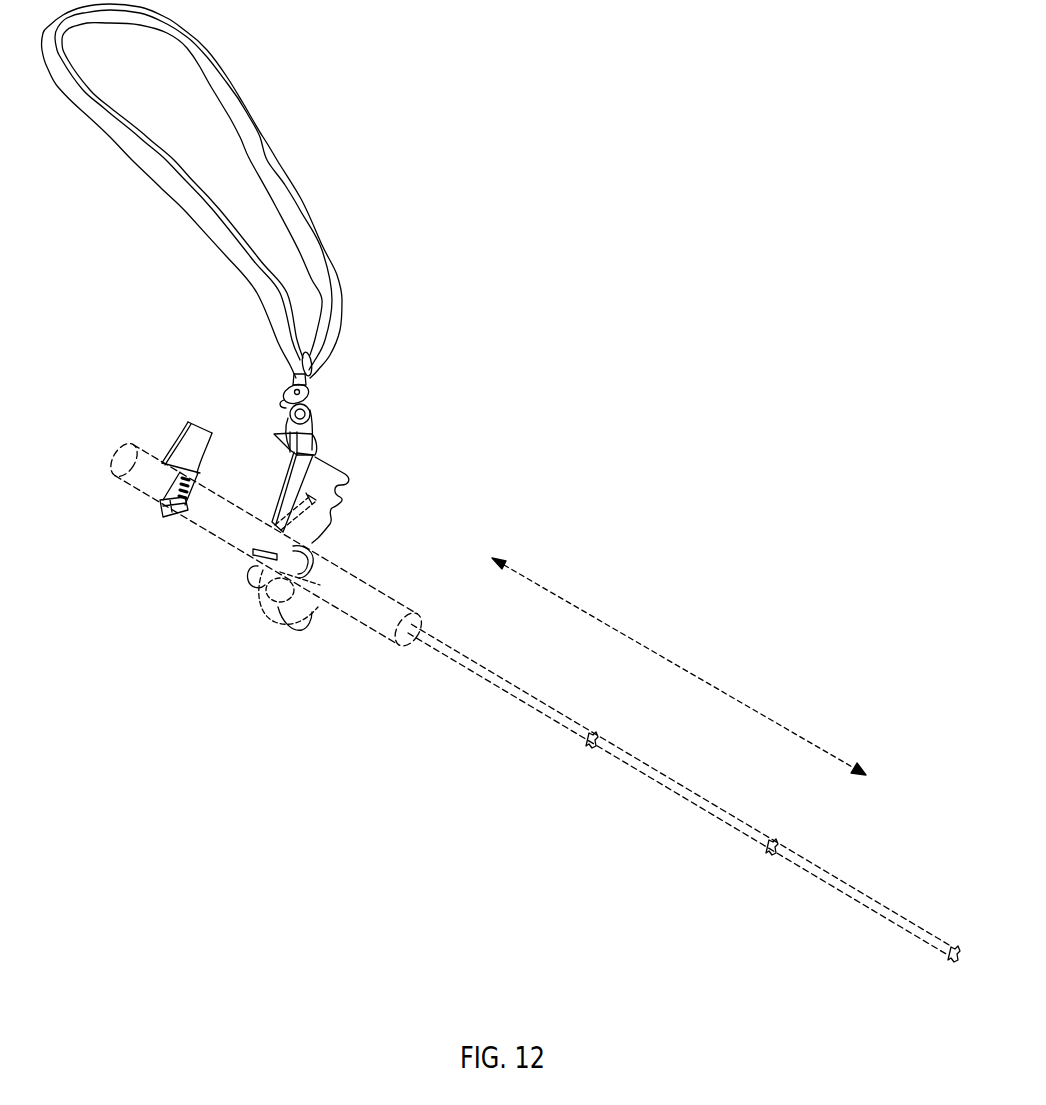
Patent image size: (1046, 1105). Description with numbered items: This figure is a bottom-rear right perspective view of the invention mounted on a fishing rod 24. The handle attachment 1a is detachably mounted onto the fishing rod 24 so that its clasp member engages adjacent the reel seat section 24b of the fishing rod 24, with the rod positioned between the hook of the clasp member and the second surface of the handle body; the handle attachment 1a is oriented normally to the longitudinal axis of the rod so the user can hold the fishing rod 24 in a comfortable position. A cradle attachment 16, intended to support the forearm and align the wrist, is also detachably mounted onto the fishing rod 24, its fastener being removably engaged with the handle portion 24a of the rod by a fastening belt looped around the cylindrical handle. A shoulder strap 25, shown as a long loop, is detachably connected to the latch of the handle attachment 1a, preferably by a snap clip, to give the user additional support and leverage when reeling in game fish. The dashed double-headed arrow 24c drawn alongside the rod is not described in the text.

The handle attachment 1a is at (345, 450).
The cradle attachment 16 is at (183, 388).
The fishing rod 24 is at (502, 645).
The handle portion 24a is at (157, 490).
The reel seat section 24b is at (327, 584).
The extension direction 24c is at (685, 668).
The shoulder strap 25 is at (273, 178).